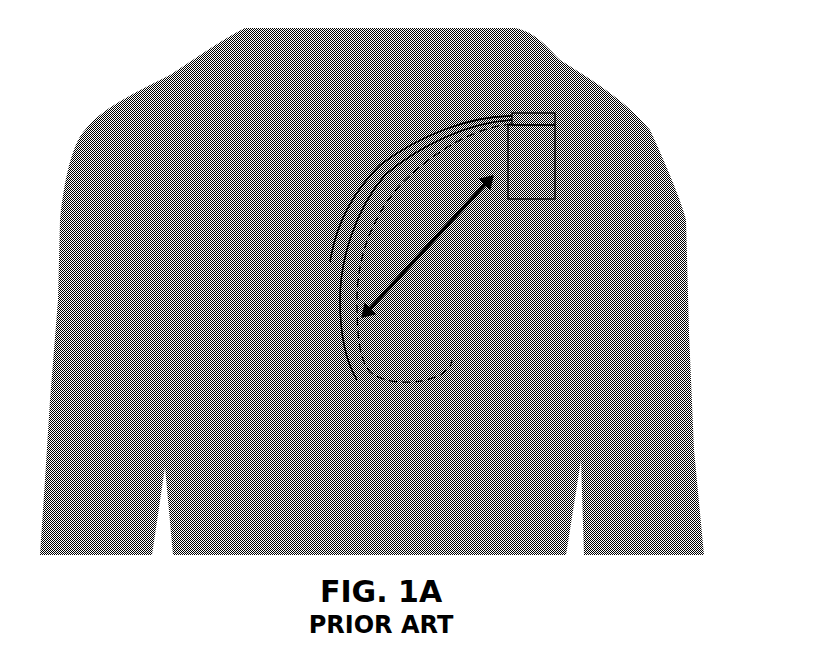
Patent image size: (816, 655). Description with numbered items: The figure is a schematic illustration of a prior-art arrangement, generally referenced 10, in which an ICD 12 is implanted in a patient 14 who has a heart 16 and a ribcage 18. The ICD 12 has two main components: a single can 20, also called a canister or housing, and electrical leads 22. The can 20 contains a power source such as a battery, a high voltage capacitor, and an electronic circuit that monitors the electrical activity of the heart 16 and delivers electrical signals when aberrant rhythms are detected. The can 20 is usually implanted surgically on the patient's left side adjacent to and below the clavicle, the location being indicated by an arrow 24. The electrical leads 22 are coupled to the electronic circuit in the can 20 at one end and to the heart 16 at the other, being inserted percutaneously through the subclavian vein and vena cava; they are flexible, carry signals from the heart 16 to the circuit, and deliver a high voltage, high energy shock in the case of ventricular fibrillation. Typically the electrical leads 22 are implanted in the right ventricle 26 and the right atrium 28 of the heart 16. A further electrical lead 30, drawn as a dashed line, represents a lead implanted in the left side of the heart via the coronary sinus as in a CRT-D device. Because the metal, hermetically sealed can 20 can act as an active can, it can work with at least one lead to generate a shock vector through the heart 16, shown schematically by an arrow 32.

The ICD implanted in a patient 10 is at (116, 33).
The ICD 12 is at (510, 94).
The patient 14 is at (706, 363).
The heart 16 is at (403, 400).
The ribcage 18 is at (200, 337).
The can 20 is at (556, 160).
The electrical leads 22 is at (324, 255).
The arrow 24 is at (547, 92).
The right ventricle 26 is at (337, 388).
The right atrium 28 is at (327, 270).
The electrical lead 30 is at (432, 370).
The arrow 32 is at (432, 248).